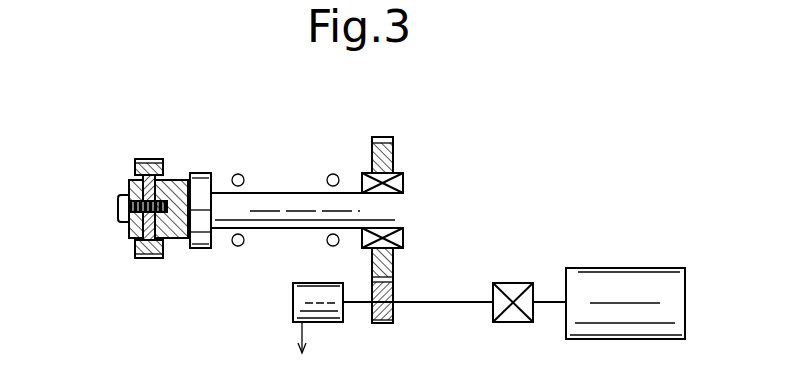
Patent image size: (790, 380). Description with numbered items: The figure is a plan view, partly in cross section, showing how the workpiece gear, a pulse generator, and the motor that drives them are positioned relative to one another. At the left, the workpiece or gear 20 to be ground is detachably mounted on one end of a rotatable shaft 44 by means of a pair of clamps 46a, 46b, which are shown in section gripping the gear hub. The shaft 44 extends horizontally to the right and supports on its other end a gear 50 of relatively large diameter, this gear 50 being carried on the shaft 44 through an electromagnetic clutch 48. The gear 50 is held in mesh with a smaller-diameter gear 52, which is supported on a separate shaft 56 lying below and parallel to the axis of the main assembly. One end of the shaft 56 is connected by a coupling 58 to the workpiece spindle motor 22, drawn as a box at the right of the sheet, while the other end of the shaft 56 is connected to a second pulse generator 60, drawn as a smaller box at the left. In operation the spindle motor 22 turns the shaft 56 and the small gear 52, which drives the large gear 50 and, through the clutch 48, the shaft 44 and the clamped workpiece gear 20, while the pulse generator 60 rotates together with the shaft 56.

The gear 20 is at (150, 165).
The workpiece spindle motor 22 is at (630, 275).
The rotatable shaft 44 is at (292, 202).
The clamp 46a is at (130, 229).
The clamp 46b is at (178, 222).
The electromagnetic clutch 48 is at (400, 237).
The gear 50 is at (392, 158).
The gear 52 is at (392, 310).
The shaft 56 is at (453, 303).
The coupling 58 is at (512, 290).
The second pulse generator 60 is at (300, 292).